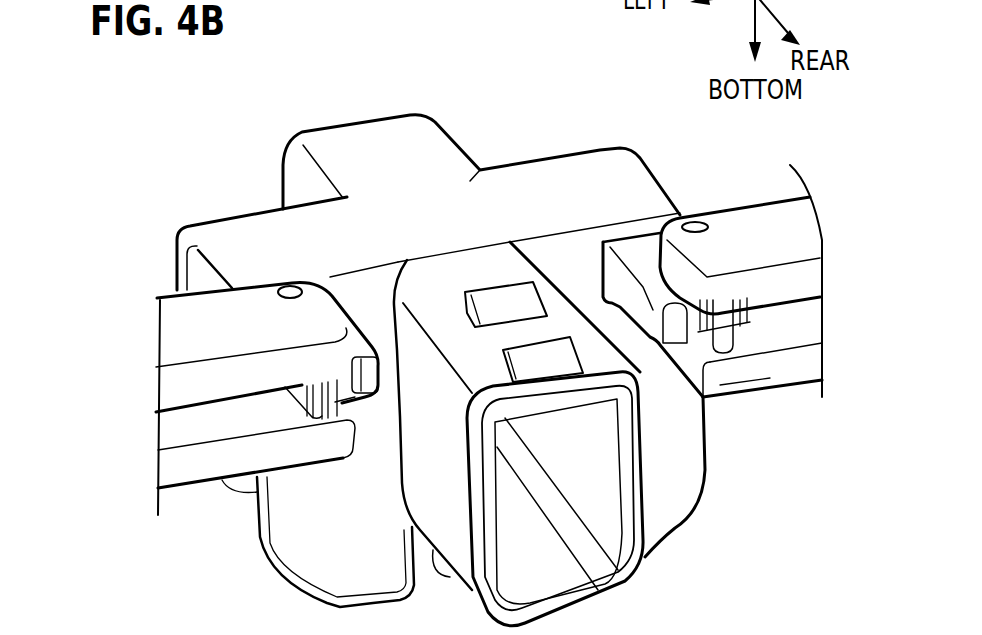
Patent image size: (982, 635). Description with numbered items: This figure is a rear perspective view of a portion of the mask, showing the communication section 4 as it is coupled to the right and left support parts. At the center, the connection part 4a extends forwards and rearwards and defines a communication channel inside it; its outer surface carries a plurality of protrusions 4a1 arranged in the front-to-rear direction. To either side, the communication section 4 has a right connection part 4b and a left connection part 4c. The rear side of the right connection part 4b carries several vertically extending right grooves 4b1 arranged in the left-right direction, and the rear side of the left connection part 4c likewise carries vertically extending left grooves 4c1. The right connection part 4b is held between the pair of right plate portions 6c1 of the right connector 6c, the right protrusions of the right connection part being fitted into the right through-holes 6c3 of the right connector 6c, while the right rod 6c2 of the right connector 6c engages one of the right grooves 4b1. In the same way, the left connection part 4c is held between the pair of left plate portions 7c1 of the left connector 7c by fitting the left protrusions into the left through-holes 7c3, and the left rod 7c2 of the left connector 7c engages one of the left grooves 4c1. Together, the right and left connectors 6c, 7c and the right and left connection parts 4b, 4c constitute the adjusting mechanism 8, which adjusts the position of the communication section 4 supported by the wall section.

The communication section 4 is at (302, 127).
The connection part 4a is at (543, 280).
The protrusions 4a1 is at (495, 300).
The right connection part 4b is at (645, 247).
The right grooves 4b1 is at (702, 347).
The left connection part 4c is at (343, 318).
The left grooves 4c1 is at (360, 397).
The right connector 6c is at (800, 476).
The right plate portions 6c1 is at (763, 212).
The right rod 6c2 is at (738, 383).
The right through-holes 6c3 is at (698, 222).
The left connector 7c is at (200, 277).
The left plate portions 7c1 is at (247, 306).
The left rod 7c2 is at (313, 413).
The left through-holes 7c3 is at (291, 286).
The adjusting mechanism 8 is at (530, 200).